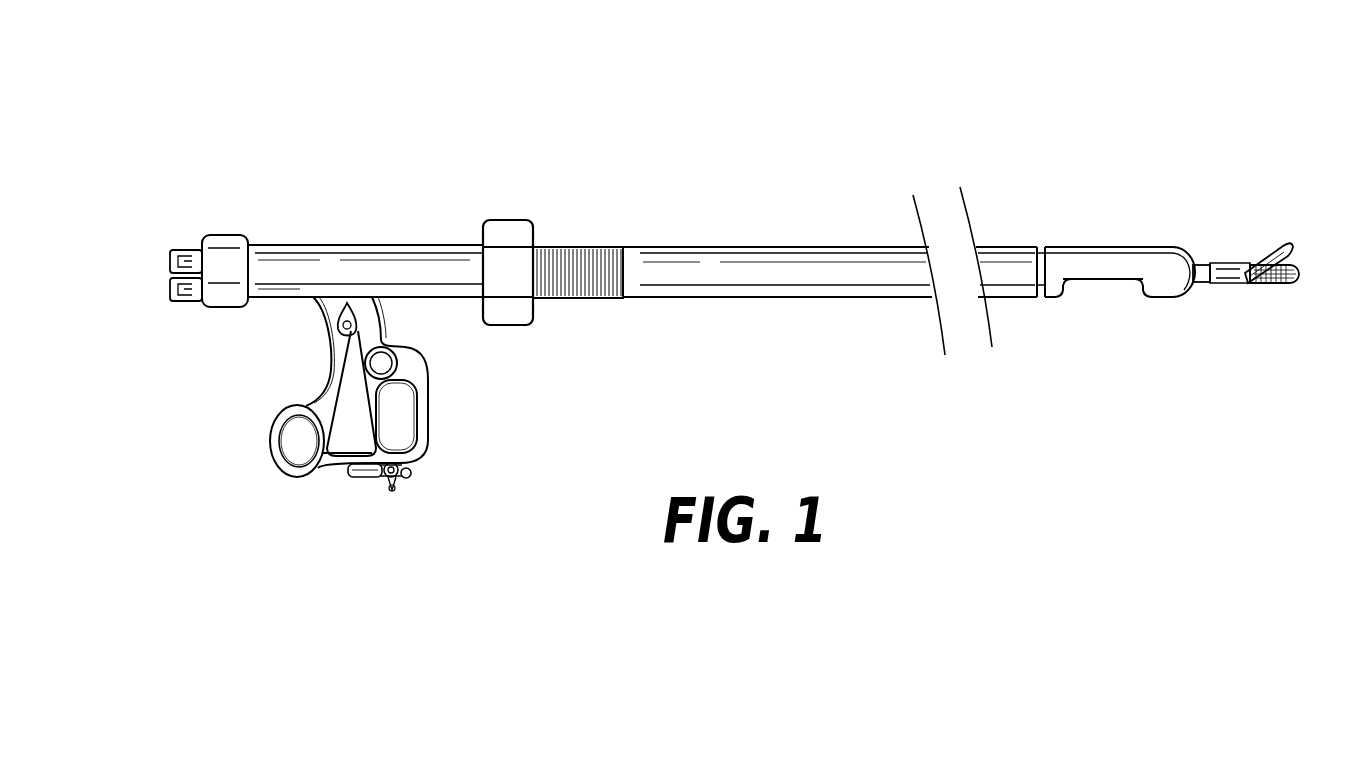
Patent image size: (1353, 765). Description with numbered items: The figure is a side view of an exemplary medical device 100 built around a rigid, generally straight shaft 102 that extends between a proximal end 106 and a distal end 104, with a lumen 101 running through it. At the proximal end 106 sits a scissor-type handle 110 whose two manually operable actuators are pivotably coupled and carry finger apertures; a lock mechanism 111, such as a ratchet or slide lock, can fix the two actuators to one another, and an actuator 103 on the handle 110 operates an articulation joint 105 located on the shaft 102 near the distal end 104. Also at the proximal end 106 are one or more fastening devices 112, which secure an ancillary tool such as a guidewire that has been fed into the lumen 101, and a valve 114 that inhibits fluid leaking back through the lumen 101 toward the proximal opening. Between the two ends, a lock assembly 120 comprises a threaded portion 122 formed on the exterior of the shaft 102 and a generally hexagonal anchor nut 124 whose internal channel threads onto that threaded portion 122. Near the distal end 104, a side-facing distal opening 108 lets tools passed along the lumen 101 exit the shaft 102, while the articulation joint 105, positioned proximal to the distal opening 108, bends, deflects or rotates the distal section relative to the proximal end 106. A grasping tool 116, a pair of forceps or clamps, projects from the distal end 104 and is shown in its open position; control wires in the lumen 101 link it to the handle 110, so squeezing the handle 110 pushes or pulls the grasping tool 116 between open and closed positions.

The medical device 100 is at (246, 120).
The lumen 101 is at (1075, 288).
The shaft 102 is at (386, 258).
The actuator 103 is at (393, 346).
The distal end 104 is at (1189, 300).
The articulation joint 105 is at (1043, 262).
The proximal end 106 is at (150, 317).
The distal opening 108 is at (1089, 283).
The handle 110 is at (270, 450).
The lock mechanism 111 is at (418, 486).
The fastening devices 112 is at (164, 283).
The valve 114 is at (233, 258).
The grasping tool 116 is at (1290, 245).
The lock assembly 120 is at (596, 231).
The threaded portion 122 is at (584, 299).
The anchor nut 124 is at (513, 313).